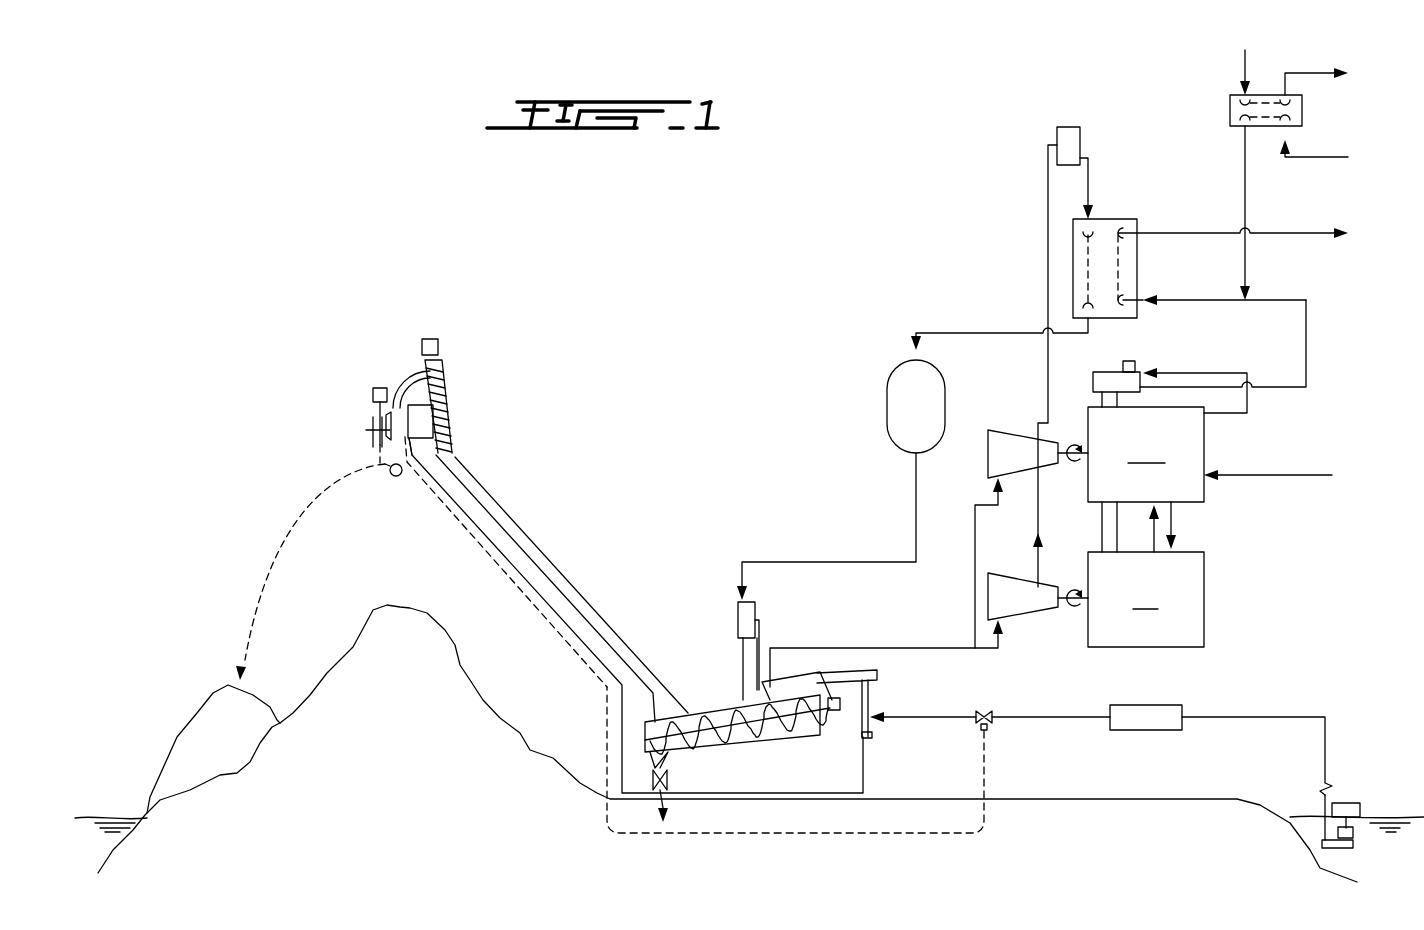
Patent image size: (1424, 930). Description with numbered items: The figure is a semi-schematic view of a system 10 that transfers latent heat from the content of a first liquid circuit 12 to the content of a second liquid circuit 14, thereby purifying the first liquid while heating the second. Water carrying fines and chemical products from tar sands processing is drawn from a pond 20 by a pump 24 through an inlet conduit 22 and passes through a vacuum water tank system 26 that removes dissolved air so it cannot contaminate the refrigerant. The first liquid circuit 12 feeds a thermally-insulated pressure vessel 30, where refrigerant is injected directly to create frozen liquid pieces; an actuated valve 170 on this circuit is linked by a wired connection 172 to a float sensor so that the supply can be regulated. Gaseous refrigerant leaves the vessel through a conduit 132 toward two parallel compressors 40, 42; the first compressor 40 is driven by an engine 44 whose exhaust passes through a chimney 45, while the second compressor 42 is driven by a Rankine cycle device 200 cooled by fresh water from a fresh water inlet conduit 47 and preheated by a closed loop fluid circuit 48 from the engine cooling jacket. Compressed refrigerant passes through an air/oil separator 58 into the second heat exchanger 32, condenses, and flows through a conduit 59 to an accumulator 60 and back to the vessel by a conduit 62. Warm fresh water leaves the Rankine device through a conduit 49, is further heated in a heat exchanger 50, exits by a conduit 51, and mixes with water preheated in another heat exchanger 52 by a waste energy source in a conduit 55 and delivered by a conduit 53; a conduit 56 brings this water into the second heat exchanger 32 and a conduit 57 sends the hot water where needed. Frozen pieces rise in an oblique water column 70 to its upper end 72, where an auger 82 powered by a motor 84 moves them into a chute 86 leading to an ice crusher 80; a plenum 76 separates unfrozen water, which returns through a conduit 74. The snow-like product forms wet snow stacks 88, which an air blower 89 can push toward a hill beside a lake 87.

The system 10 is at (735, 300).
The first liquid circuit 12 is at (1068, 722).
The second liquid circuit 14 is at (1188, 219).
The pond 20 is at (1390, 815).
The inlet conduit 22 is at (1270, 717).
The pump 24 is at (1350, 838).
The vacuum water tank system 26 is at (1145, 730).
The thermally-insulated pressure vessel 30 is at (688, 655).
The second heat exchanger 32 is at (1108, 219).
The first compressor 40 is at (1020, 603).
The second compressor 42 is at (1010, 440).
The engine 44 is at (1146, 599).
The chimney 45 is at (1110, 527).
The fresh water inlet conduit 47 is at (1267, 475).
The independent closed loop fluid circuit 48 is at (1172, 522).
The conduit 49 is at (1250, 397).
The heat exchanger 50 is at (1100, 372).
The conduit 51 is at (1306, 340).
The heat exchanger 52 is at (1303, 108).
The conduit 53 is at (1248, 180).
The conduit 55 is at (1245, 65).
The conduit 56 is at (1212, 300).
The conduit 57 is at (1290, 238).
The air/oil separator 58 is at (1068, 127).
The conduit 59 is at (965, 333).
The accumulator 60 is at (898, 398).
The conduit 62 is at (916, 490).
The water column 70 is at (527, 530).
The upper end 72 is at (458, 372).
The conduit 74 is at (483, 558).
The plenum 76 is at (452, 452).
The ice crusher 80 is at (350, 427).
The auger 82 is at (452, 402).
The motor 84 is at (428, 339).
The chute 86 is at (405, 380).
The lake 87 is at (110, 818).
The wet snow stacks 88 is at (233, 745).
The air blower 89 is at (402, 480).
The conduit 132 is at (865, 650).
The actuated valve 170 is at (990, 728).
The wired connection 172 is at (793, 833).
The Rankine cycle device 200 is at (1146, 454).